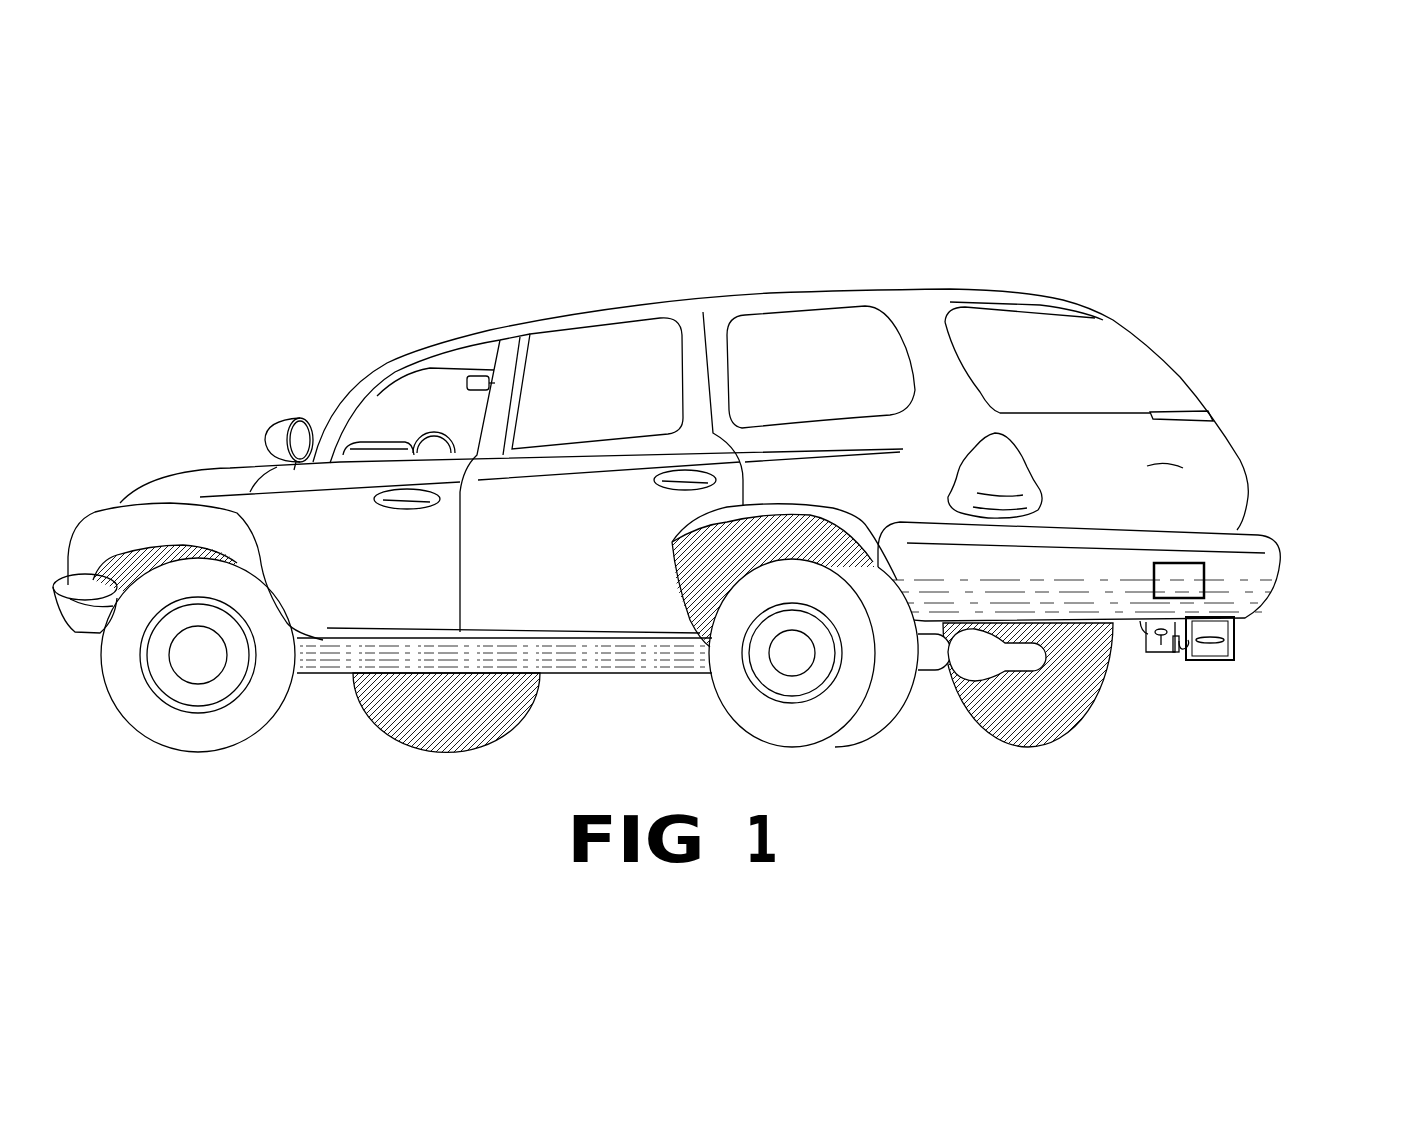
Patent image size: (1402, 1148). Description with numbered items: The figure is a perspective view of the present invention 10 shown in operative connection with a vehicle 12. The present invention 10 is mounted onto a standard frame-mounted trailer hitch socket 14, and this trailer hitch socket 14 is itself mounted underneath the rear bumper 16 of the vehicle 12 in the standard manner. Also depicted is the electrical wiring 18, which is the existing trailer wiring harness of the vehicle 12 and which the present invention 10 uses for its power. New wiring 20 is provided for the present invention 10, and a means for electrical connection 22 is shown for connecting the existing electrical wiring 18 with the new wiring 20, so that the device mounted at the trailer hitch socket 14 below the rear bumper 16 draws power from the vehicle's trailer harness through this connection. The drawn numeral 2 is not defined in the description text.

The present invention 10 is at (1181, 775).
The vehicle 12 is at (1060, 300).
The trailer hitch socket 14 is at (1185, 700).
The rear bumper 16 is at (1262, 567).
The electrical wiring 18 is at (1145, 628).
The new wiring 20 is at (1175, 662).
The means for electrical connection 22 is at (1162, 666).
The sign plate 2 is at (1219, 700).